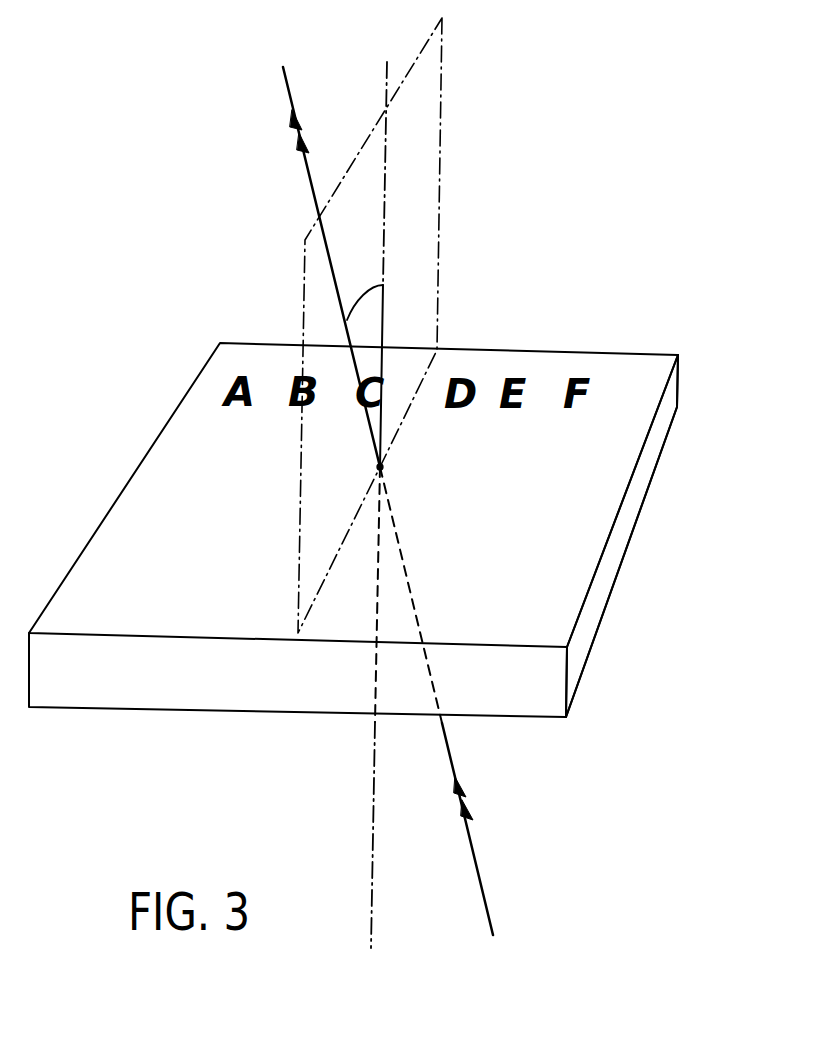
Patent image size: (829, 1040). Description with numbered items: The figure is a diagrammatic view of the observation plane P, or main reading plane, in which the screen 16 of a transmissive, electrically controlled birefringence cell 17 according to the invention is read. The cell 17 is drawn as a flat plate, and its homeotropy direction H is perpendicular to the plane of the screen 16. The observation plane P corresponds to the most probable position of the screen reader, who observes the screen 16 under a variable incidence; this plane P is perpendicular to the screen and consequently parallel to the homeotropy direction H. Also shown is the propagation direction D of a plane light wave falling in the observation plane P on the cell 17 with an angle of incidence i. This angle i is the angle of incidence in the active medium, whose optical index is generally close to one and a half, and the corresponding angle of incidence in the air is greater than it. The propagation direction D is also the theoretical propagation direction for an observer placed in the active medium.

The screen 16 is at (143, 625).
The electrically controlled birefringence cell 17 is at (593, 690).
The observation plane P is at (440, 108).
The homeotropy direction H is at (375, 757).
The propagation direction D is at (473, 853).
The angle of incidence i is at (365, 284).